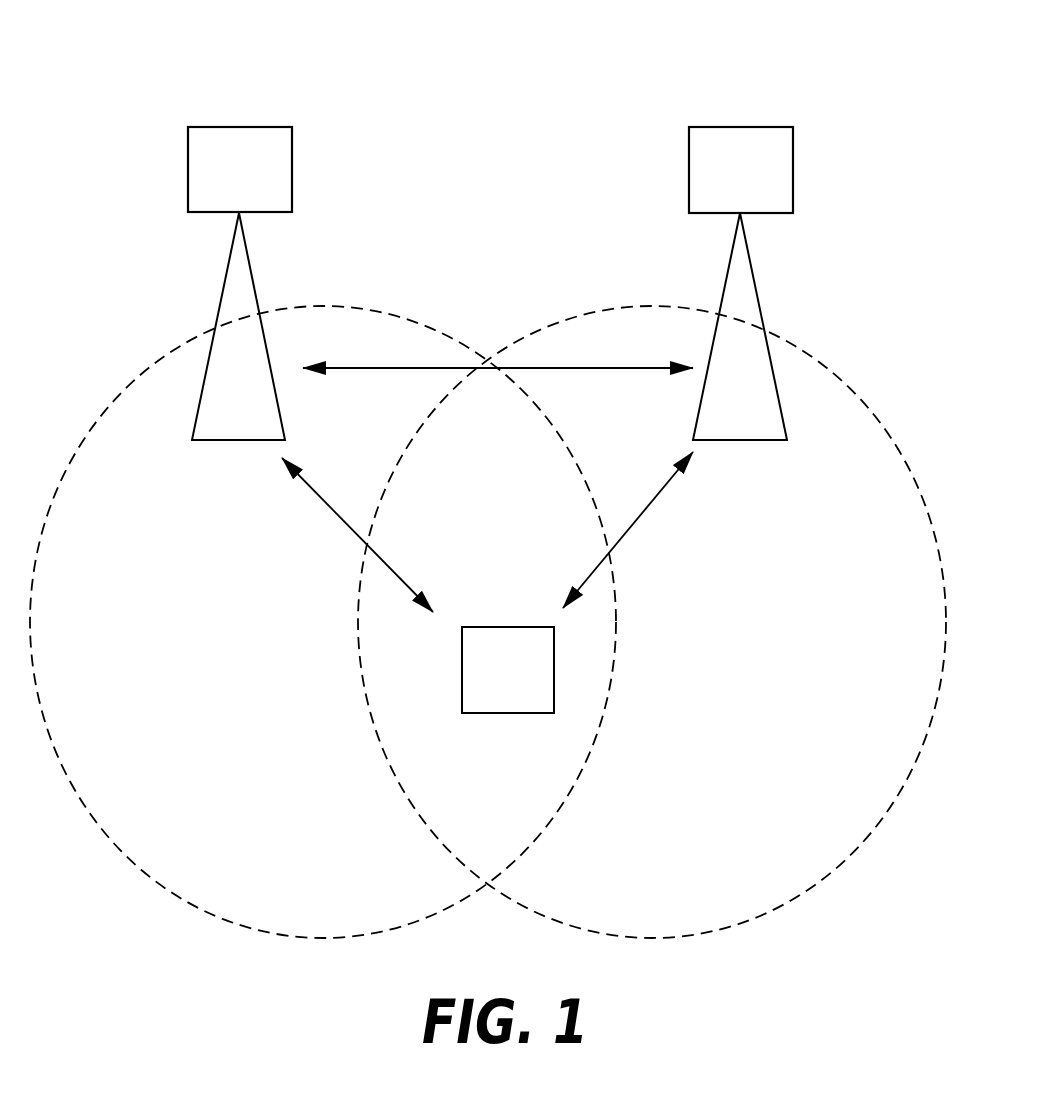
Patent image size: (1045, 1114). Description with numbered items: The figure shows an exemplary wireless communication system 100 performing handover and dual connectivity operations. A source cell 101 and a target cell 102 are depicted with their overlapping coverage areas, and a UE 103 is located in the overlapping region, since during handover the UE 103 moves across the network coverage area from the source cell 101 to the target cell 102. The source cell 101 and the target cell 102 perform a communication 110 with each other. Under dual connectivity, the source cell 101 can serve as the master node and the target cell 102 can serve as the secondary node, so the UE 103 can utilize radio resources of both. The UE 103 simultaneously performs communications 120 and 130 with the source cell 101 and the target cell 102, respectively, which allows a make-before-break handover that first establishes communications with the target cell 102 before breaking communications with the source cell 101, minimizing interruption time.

The wireless communication system 100 is at (582, 92).
The source cell 101 is at (240, 283).
The target cell 102 is at (741, 283).
The UE 103 is at (508, 670).
The communication 110 is at (481, 362).
The communication 120 is at (347, 525).
The communication 130 is at (638, 520).